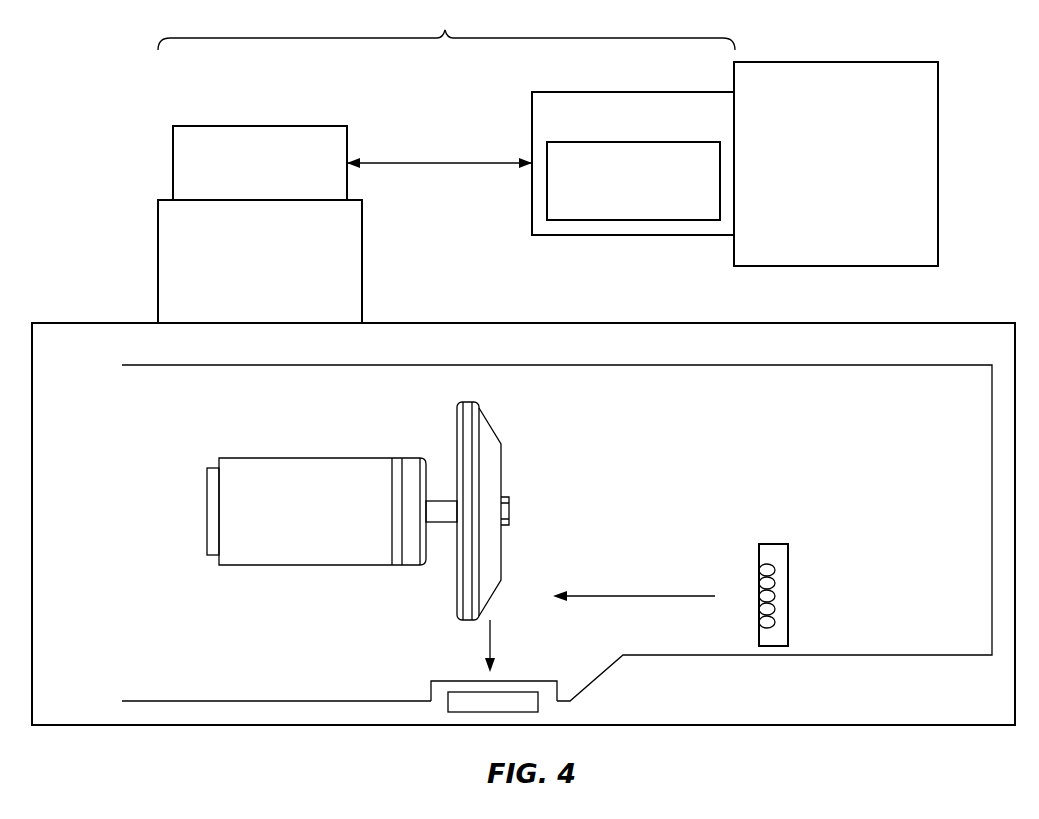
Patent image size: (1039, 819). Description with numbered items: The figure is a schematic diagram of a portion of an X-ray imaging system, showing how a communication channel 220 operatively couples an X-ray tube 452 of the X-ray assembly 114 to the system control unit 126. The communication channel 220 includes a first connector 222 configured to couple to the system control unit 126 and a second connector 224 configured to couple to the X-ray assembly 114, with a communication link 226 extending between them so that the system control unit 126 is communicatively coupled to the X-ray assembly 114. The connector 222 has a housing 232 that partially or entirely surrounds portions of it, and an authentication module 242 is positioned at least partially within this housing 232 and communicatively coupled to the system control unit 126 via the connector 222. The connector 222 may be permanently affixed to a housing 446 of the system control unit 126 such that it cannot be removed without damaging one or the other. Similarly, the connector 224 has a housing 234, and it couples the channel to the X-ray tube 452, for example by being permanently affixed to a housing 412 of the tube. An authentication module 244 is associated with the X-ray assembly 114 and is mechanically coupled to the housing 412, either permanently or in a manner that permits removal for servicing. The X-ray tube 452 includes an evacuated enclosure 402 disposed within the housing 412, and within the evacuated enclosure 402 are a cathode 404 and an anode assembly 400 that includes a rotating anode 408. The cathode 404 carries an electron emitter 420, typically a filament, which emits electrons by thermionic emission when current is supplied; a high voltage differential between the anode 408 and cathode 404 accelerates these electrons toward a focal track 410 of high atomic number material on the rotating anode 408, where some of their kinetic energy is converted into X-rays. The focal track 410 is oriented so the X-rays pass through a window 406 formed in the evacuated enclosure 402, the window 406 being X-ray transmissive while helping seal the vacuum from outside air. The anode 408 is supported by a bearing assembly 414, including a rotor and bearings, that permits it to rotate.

The X-ray assembly 114 is at (522, 473).
The system control unit 126 is at (848, 185).
The communication channel 220 is at (446, 28).
The first connector 222 is at (701, 126).
The second connector 224 is at (275, 186).
The communication link 226 is at (412, 163).
The housing 232 is at (633, 195).
The housing 234 is at (226, 163).
The authentication module 242 is at (684, 203).
The authentication module 244 is at (313, 285).
The anode assembly 400 is at (332, 477).
The evacuated enclosure 402 is at (165, 365).
The cathode 404 is at (777, 595).
The window 406 is at (456, 702).
The rotating anode 408 is at (462, 417).
The focal track 410 is at (487, 420).
The housing 412 is at (77, 323).
The bearing assembly 414 is at (358, 472).
The electron emitter 420 is at (760, 570).
The housing 446 is at (836, 180).
The X-ray tube 452 is at (557, 484).